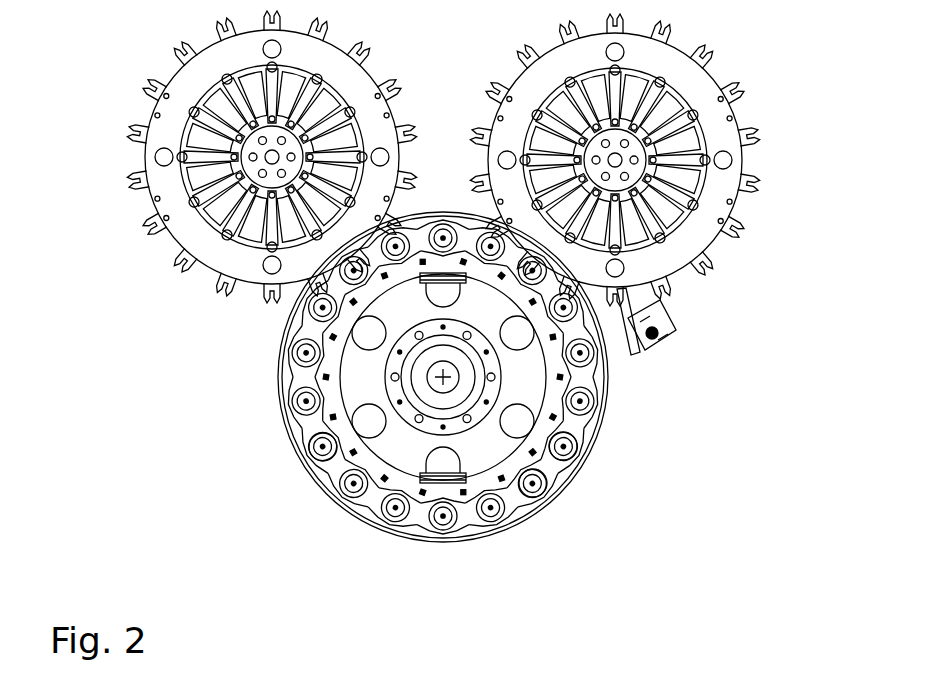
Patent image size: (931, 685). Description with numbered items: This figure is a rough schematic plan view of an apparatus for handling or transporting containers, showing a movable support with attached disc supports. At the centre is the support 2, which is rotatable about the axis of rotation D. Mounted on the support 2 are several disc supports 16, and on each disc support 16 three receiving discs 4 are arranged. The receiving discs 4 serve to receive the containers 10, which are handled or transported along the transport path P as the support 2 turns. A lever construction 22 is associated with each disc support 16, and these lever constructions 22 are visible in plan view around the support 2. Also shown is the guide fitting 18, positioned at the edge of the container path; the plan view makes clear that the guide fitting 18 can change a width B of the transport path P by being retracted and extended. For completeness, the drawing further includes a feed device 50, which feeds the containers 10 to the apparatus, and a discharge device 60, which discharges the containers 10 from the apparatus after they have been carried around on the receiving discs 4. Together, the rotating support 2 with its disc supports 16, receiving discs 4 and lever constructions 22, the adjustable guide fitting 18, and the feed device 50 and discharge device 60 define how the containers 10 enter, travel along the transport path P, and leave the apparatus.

The support 2 is at (405, 457).
The receiving disc 4 is at (535, 486).
The container 10 is at (470, 510).
The disc support 16 is at (597, 430).
The guide fitting 18 is at (640, 360).
The lever construction 22 is at (565, 448).
The feed device 50 is at (761, 52).
The discharge device 60 is at (137, 52).
The width of transport path B is at (618, 358).
The axis of rotation D is at (318, 446).
The transport path P is at (470, 552).